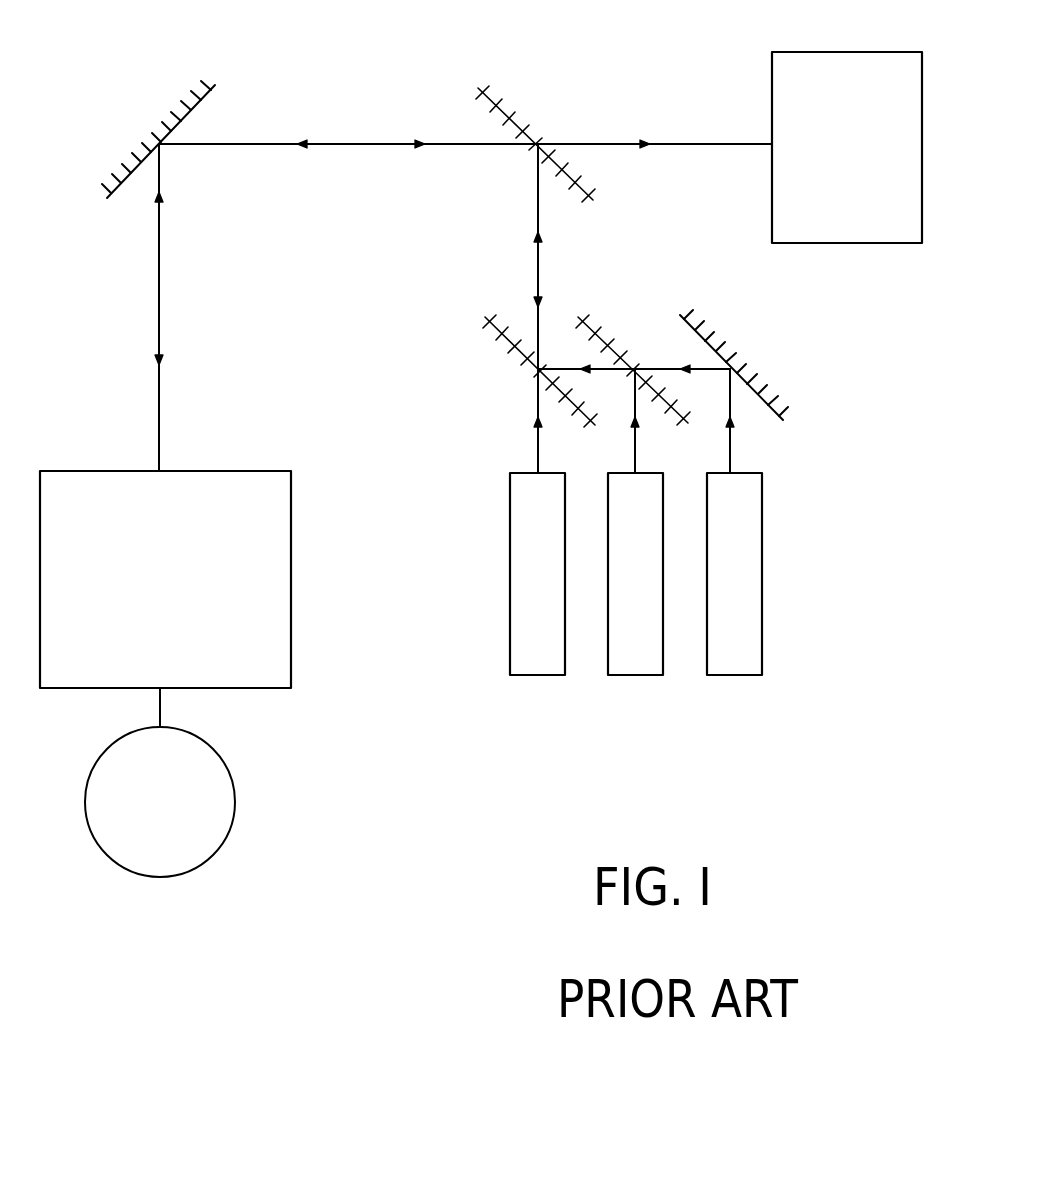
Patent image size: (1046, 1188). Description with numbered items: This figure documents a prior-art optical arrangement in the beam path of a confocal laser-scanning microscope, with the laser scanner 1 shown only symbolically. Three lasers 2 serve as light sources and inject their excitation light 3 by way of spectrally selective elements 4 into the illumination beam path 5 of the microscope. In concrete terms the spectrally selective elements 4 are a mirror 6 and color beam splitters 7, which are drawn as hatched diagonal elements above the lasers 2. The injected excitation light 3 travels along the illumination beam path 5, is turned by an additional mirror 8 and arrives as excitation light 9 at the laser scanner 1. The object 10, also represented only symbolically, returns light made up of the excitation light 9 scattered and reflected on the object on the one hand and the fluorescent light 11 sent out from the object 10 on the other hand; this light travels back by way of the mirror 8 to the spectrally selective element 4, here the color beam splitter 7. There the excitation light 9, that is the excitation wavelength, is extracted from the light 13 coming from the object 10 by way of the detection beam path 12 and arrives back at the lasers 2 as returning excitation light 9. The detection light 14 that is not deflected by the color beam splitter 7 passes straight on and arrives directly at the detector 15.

The laser scanner 1 is at (291, 609).
The lasers 2 is at (723, 675).
The excitation light 3 is at (538, 196).
The spectrally selective elements 4 is at (608, 213).
The illumination beam path 5 is at (154, 303).
The mirror 6 is at (704, 334).
The color beam splitter 7 is at (501, 92).
The additional mirror 8 is at (206, 103).
The excitation light 9 is at (540, 298).
The object 10 is at (160, 782).
The fluorescent light 11 is at (348, 185).
The detection beam path 12 is at (695, 139).
The light coming from object 13 is at (262, 146).
The detection light 14 is at (600, 143).
The detector 15 is at (875, 243).